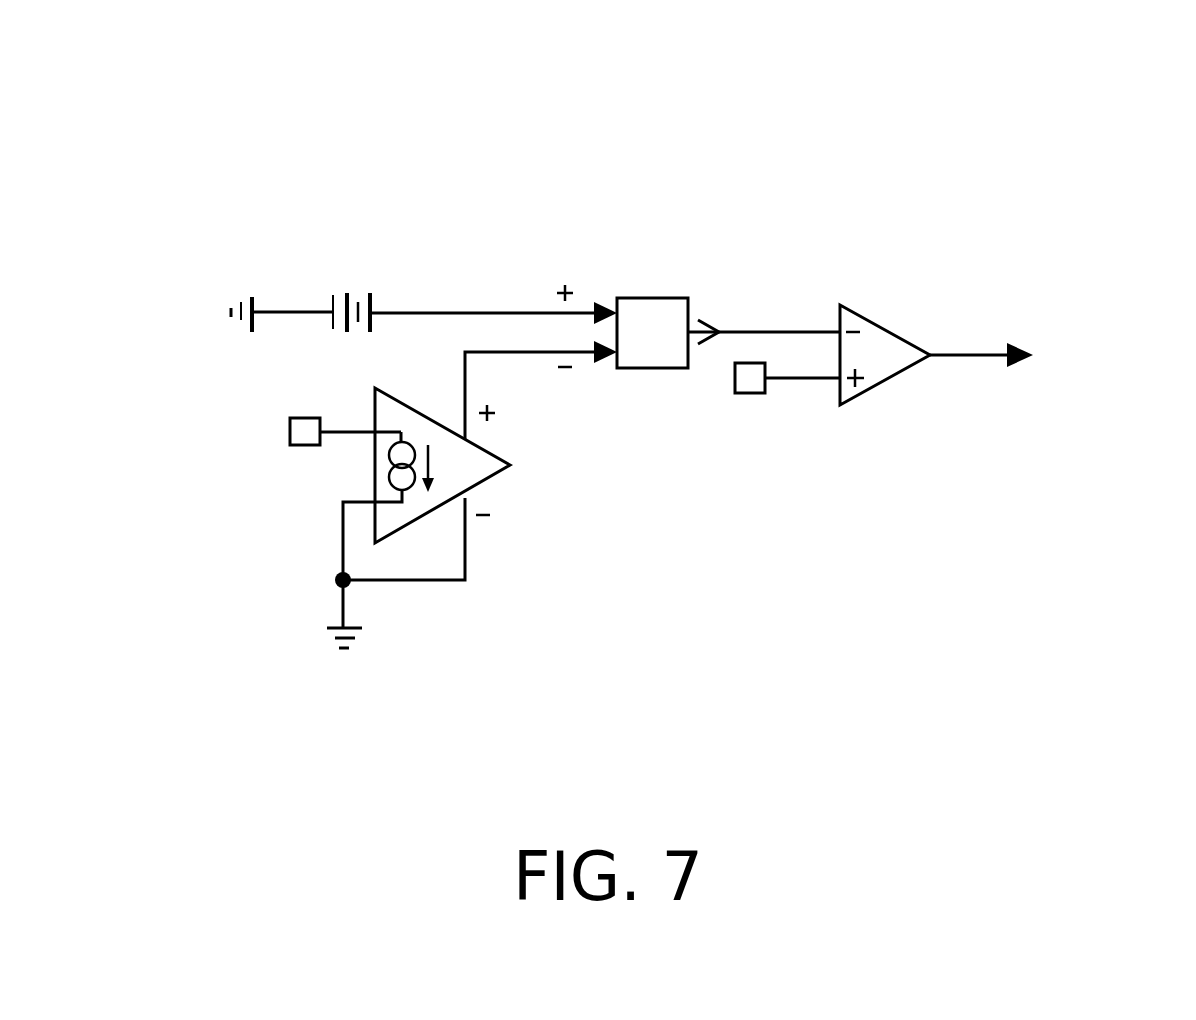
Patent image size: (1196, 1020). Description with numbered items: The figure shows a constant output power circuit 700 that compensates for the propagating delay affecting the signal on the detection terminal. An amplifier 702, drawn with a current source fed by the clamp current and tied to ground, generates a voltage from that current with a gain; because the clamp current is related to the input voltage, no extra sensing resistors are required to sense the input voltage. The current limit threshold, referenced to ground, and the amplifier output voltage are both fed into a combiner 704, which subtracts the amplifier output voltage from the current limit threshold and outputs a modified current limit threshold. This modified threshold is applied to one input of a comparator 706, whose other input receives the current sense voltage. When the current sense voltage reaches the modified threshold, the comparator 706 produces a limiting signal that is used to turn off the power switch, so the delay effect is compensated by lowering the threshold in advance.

The constant output power circuit 700 is at (1081, 137).
The amplifier 702 is at (490, 478).
The combiner 704 is at (650, 298).
The comparator 706 is at (883, 328).